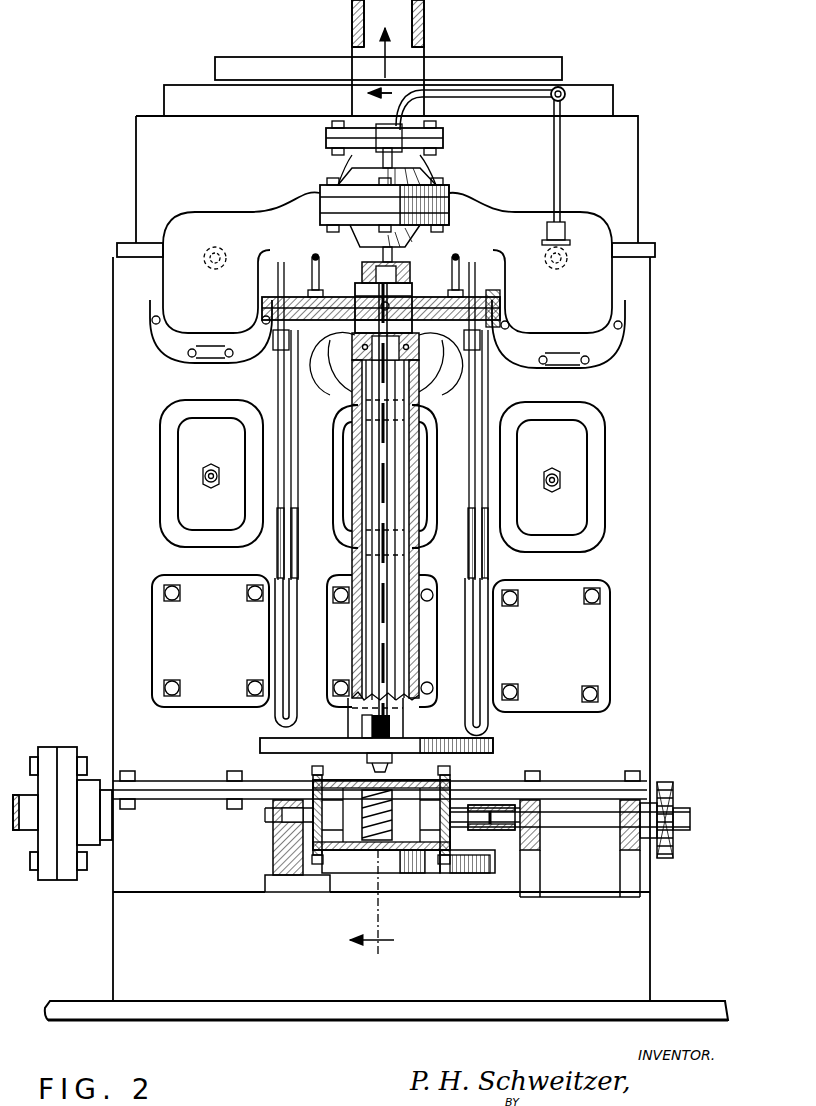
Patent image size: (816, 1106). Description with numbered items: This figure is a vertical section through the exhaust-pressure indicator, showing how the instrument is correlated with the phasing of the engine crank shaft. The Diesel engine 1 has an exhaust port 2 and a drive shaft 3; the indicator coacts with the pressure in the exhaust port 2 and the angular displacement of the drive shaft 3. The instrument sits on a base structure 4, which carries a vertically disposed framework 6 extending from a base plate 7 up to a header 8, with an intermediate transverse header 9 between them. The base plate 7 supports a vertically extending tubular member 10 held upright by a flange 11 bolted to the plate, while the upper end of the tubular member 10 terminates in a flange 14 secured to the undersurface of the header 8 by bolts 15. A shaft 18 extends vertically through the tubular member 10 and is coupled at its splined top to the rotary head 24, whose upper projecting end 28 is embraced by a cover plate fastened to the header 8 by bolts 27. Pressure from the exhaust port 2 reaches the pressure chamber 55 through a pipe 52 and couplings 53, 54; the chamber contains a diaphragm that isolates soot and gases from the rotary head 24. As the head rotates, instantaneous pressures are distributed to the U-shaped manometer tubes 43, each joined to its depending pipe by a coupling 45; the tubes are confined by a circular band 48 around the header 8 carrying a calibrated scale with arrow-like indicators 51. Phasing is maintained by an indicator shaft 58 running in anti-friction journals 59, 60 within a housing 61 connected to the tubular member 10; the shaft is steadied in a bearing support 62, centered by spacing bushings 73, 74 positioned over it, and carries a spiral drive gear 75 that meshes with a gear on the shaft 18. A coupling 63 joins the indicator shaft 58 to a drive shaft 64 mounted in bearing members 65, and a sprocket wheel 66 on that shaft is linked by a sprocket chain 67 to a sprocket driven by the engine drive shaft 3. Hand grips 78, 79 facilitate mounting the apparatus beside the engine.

The Diesel engine 1 is at (690, 440).
The exhaust port 2 is at (590, 237).
The drive shaft 3 is at (372, 503).
The base structure 4 is at (128, 930).
The framework 6 is at (372, 725).
The base plate 7 is at (298, 888).
The header 8 is at (262, 305).
The transverse header 9 is at (494, 749).
The tubular member 10 is at (358, 560).
The flange 11 is at (352, 872).
The flange 14 is at (352, 340).
The bolts 15 is at (415, 340).
The shaft 18 is at (392, 505).
The rotary head 24 is at (355, 395).
The bolts 27 is at (425, 262).
The upper projecting end 28 is at (440, 222).
The manometer tubes 43 is at (285, 635).
The coupling 45 is at (278, 340).
The circular band 48 is at (500, 310).
The arrow-like indicators 51 is at (556, 245).
The pipe 52 is at (462, 95).
The coupling 53 is at (565, 88).
The coupling 54 is at (355, 150).
The pressure chamber 55 is at (415, 185).
The indicator shaft 58 is at (268, 818).
The anti-friction journal 59 is at (332, 896).
The anti-friction journal 60 is at (458, 858).
The housing 61 is at (420, 886).
The bearing support 62 is at (290, 840).
The coupling 63 is at (520, 830).
The drive shaft 64 is at (560, 813).
The bearing members 65 is at (630, 875).
The sprocket wheel 66 is at (668, 858).
The sprocket chain 67 is at (676, 790).
The spacing bushing 73 is at (312, 790).
The end plate 74 is at (455, 790).
The spiral drive gear 75 is at (410, 756).
The hand grip 78 is at (314, 262).
The hand grip 79 is at (460, 262).